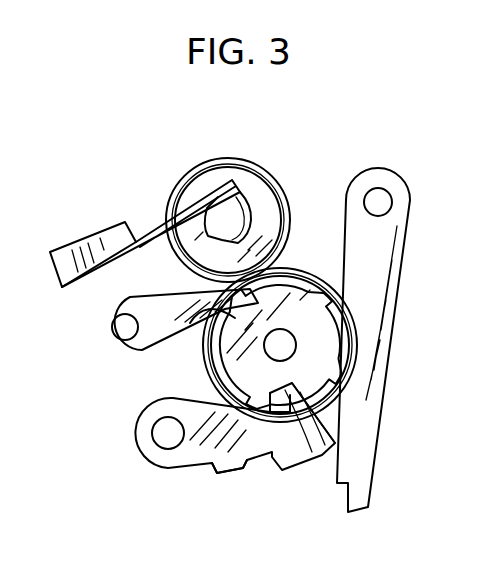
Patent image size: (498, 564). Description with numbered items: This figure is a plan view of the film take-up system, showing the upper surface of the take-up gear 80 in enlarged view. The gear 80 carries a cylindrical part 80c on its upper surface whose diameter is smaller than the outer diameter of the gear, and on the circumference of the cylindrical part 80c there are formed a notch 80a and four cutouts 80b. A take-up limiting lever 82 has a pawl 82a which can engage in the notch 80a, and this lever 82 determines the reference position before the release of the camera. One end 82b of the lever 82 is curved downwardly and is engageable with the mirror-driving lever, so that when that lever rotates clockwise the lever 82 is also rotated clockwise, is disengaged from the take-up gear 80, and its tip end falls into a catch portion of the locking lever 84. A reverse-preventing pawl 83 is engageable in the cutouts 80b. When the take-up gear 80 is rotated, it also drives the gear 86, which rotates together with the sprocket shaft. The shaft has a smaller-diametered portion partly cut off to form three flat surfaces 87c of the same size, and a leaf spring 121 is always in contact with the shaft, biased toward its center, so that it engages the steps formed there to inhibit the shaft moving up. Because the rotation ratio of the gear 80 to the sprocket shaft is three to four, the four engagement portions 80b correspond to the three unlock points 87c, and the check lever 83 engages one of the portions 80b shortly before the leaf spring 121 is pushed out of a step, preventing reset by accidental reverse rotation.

The take-up gear 80 is at (309, 368).
The notch 80a is at (262, 415).
The cutouts 80b is at (320, 290).
The cylindrical part 80c is at (330, 346).
The take-up limiting lever 82 is at (209, 450).
The pawl 82a is at (288, 395).
The one end of the lever 82b is at (218, 472).
The reverse-preventing pawl 83 is at (125, 350).
The locking lever 84 is at (400, 270).
The gear 86 is at (238, 157).
The flat surfaces 87c is at (245, 205).
The leaf spring 121 is at (84, 247).